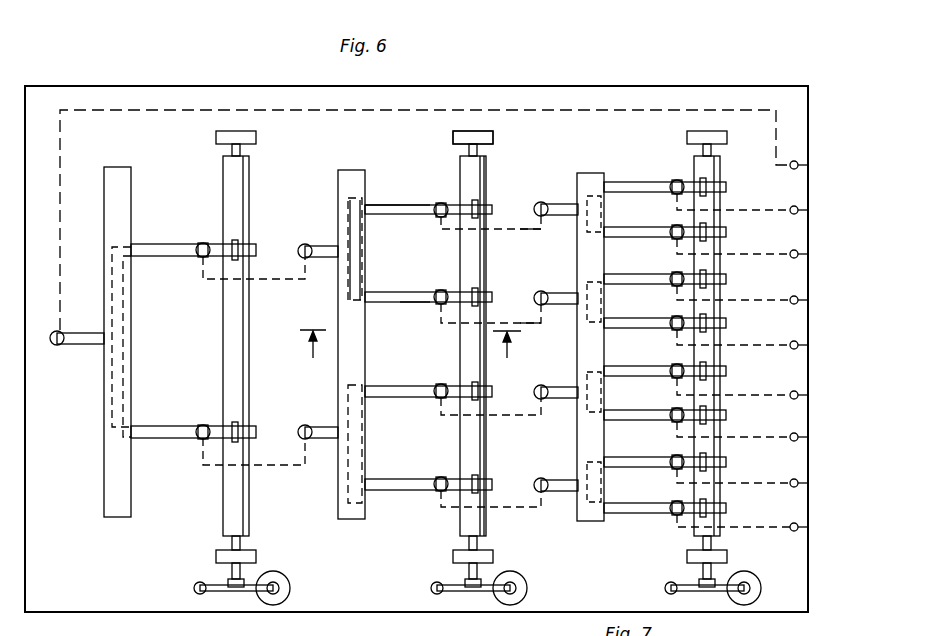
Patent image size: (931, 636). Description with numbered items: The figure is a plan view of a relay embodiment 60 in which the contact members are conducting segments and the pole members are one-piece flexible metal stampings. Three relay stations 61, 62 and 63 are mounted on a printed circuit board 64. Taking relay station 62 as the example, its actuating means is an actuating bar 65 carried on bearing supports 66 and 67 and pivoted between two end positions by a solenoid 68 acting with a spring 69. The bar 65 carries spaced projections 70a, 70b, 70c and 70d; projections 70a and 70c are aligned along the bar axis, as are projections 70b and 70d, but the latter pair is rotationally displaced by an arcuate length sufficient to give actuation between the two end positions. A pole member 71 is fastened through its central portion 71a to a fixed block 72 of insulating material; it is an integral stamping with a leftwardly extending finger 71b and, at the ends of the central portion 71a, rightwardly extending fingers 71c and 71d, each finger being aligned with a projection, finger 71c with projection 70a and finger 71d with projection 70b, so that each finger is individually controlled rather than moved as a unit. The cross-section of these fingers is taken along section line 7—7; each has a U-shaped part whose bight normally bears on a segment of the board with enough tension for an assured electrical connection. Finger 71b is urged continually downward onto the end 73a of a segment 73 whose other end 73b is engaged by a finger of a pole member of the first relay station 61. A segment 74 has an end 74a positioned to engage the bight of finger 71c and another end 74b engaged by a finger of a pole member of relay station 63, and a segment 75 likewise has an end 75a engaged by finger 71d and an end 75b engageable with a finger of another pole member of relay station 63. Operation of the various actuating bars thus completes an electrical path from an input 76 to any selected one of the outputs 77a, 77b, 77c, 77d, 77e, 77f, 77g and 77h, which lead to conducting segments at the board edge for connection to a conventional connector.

The relay embodiment 60 is at (80, 56).
The first relay station 61 is at (217, 122).
The relay station 62 is at (484, 122).
The relay station 63 is at (714, 122).
The printed circuit board 64 is at (626, 88).
The actuating bar 65 is at (488, 172).
The bearing support 66 is at (452, 136).
The bearing support 67 is at (452, 556).
The solenoid 68 is at (524, 582).
The spring 69 is at (430, 588).
The projection 70a is at (487, 202).
The projection 70b is at (462, 288).
The projection 70c is at (464, 385).
The projection 70d is at (464, 478).
The pole member 71 is at (388, 196).
The central portion 71a is at (354, 252).
The leftwardly extending finger 71b is at (330, 240).
The rightwardly extending finger 71c is at (416, 205).
The rightwardly extending finger 71d is at (410, 302).
The fixed block 72 is at (346, 178).
The segment 73 is at (280, 281).
The end of segment 73a is at (304, 244).
The end of segment 73b is at (203, 242).
The segment 74 is at (514, 230).
The end of segment 74a is at (441, 220).
The end of segment 74b is at (546, 202).
The segment 75 is at (530, 328).
The end of segment 75a is at (432, 292).
The end of segment 75b is at (541, 291).
The input 76 is at (794, 160).
The output 77a is at (790, 206).
The output 77b is at (790, 250).
The output 77c is at (790, 296).
The output 77d is at (790, 341).
The output 77e is at (790, 391).
The output 77f is at (790, 433).
The output 77g is at (790, 479).
The terminal h 77h is at (790, 523).
The section line 7 is at (410, 357).